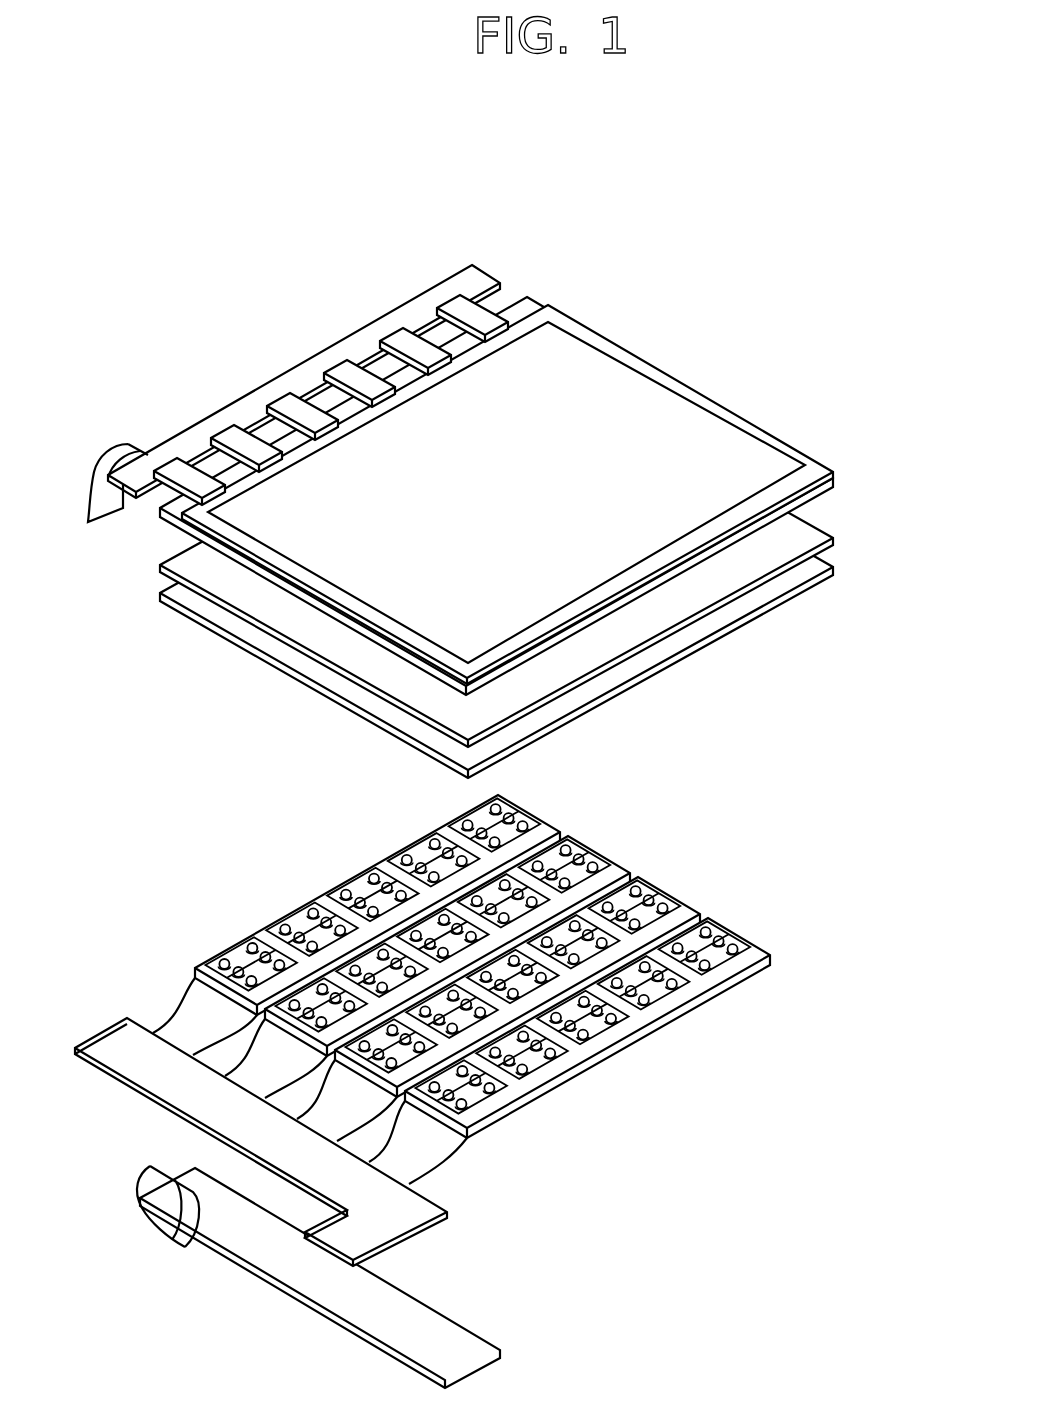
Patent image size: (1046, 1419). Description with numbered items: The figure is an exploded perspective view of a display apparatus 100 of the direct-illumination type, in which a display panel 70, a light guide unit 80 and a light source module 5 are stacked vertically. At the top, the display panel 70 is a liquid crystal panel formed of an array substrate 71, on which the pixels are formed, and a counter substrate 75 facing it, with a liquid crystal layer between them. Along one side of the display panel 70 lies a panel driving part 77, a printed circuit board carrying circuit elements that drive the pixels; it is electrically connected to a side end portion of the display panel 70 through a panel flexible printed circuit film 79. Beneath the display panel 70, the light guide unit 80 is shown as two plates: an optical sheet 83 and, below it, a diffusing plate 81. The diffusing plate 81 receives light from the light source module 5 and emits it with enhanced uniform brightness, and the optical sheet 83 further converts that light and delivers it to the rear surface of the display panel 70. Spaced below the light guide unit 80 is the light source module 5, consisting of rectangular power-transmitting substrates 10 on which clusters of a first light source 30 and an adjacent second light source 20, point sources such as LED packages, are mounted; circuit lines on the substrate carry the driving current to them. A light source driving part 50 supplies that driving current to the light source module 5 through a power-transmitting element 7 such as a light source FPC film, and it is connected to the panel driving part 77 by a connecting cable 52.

The display apparatus 100 is at (537, 156).
The light source module 5 is at (537, 966).
The power-transmitting element 7 is at (453, 1212).
The power-transmitting substrate 10 is at (648, 1028).
The second light source 20 is at (687, 1002).
The first light source 30 is at (714, 972).
The light source driving part 50 is at (500, 1358).
The connecting cable 52 is at (142, 1202).
The display panel 70 is at (556, 496).
The array substrate 71 is at (834, 482).
The counter substrate 75 is at (834, 476).
The panel driving part 77 is at (413, 313).
The panel flexible printed circuit film 79 is at (480, 317).
The light guide unit 80 is at (556, 570).
The diffusing plate 81 is at (834, 569).
The optical sheet 83 is at (834, 541).